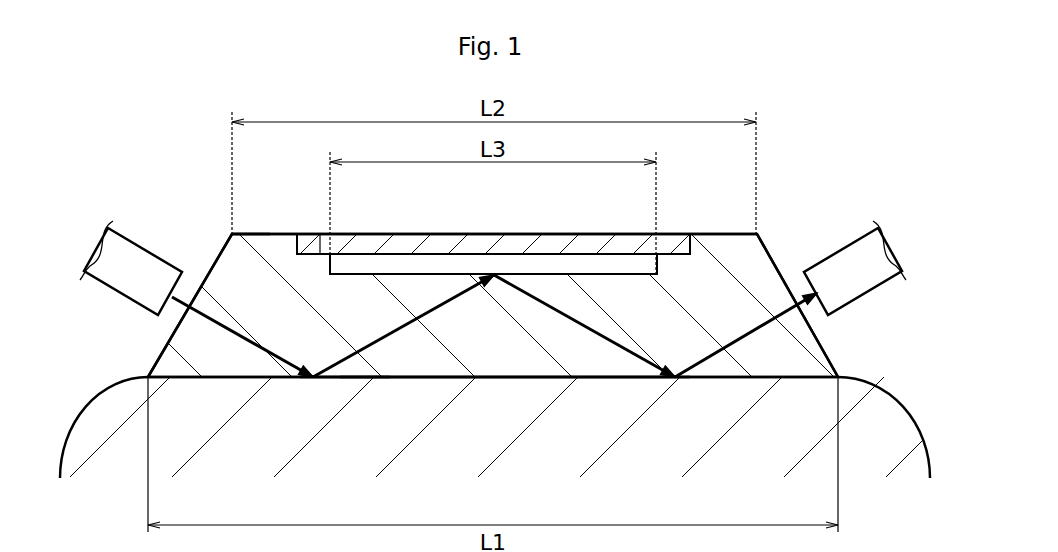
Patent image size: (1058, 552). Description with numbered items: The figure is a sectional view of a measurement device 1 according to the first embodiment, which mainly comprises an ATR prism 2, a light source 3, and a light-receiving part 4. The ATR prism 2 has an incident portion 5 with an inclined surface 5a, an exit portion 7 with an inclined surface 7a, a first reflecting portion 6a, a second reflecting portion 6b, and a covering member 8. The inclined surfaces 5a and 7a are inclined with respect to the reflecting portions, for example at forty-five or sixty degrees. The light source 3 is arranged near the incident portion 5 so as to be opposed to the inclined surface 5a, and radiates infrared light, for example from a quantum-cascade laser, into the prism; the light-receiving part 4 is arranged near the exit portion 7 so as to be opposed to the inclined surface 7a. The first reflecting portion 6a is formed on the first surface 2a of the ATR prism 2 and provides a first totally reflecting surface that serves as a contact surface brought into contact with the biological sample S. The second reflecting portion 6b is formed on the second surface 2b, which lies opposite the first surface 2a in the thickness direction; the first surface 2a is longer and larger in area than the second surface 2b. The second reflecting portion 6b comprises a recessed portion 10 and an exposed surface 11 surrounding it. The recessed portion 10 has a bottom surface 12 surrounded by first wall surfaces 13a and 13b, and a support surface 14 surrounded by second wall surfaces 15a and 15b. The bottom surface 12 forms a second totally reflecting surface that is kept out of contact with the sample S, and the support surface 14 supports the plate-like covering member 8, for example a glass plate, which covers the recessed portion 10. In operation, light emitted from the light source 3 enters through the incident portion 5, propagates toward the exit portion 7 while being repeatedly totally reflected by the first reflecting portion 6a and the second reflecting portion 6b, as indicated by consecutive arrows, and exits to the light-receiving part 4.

The measurement device 1 is at (494, 318).
The ATR prism 2 is at (499, 331).
The first surface 2a is at (620, 377).
The second surface 2b is at (272, 228).
The light source 3 is at (105, 302).
The light-receiving part 4 is at (883, 302).
The incident portion 5 is at (205, 265).
The inclined surface 5a is at (173, 332).
The first reflecting portion 6a is at (520, 377).
The second reflecting portion 6b is at (516, 272).
The exit portion 7 is at (783, 263).
The inclined surface 7a is at (823, 347).
The covering member 8 is at (491, 241).
The recessed portion 10 is at (493, 231).
The exposed surface 11 is at (255, 232).
The bottom surface 12 is at (365, 377).
The first wall surface 13a is at (350, 248).
The first wall surface 13b is at (655, 268).
The support surface 14 is at (318, 240).
The second wall surface 15a is at (310, 258).
The second wall surface 15b is at (688, 246).
The sample S is at (893, 402).